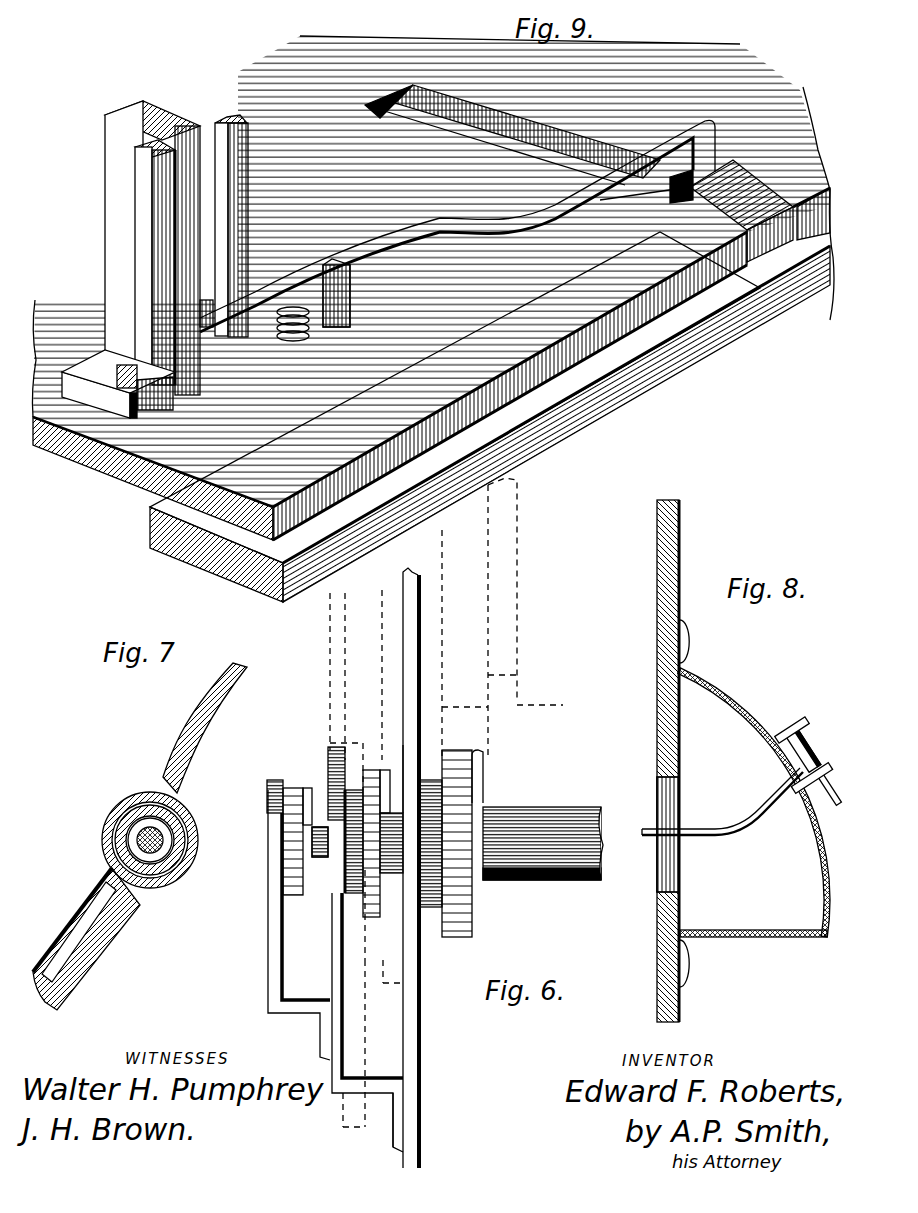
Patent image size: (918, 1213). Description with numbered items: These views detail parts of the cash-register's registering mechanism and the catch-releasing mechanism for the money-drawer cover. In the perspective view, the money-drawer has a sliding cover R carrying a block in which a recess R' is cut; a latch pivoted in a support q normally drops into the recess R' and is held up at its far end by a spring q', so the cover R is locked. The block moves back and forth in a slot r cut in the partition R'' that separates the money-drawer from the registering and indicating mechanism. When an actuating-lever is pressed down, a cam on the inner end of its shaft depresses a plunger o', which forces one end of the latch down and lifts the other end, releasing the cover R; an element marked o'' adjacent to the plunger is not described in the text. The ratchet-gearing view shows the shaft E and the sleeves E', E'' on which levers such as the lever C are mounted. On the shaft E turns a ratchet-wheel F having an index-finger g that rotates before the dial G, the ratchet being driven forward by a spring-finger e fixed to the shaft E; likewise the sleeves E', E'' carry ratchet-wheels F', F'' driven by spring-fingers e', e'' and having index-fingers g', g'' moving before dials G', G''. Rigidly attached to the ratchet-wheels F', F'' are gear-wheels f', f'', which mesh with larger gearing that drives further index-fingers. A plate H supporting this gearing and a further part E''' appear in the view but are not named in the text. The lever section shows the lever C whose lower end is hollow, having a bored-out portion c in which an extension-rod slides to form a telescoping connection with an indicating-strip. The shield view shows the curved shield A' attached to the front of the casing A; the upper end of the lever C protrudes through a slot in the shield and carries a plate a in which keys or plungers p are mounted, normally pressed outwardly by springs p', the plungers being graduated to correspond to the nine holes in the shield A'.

In FIG. 9, the slot r is at (425, 90).
In FIG. 9, the sliding cover R is at (431, 417).
In FIG. 9, the recess R' is at (715, 203).
In FIG. 9, the partition R'' is at (520, 62).
In FIG. 9, the plate a is at (475, 248).
In FIG. 9, the support q is at (348, 293).
In FIG. 9, the spring q' is at (285, 342).
In FIG. 9, the plunger o' is at (183, 248).
In FIG. 9, the base of guide posts o'' is at (118, 330).
In FIG. 7, the actuating-lever C is at (140, 836).
In FIG. 8, the actuating-lever C is at (722, 814).
In FIG. 7, the bored-out portion c is at (100, 922).
In FIG. 7, the shaft E is at (176, 836).
In FIG. 6, the shaft E is at (303, 843).
In FIG. 7, the sleeve E' is at (175, 842).
In FIG. 6, the sleeve E' is at (391, 879).
In FIG. 7, the sleeve E'' is at (150, 840).
In FIG. 6, the sleeve E'' is at (331, 876).
In FIG. 7, the shaft E''' is at (130, 840).
In FIG. 6, the shaft E''' is at (548, 826).
In FIG. 6, the index-finger g is at (267, 781).
In FIG. 6, the index-finger g' is at (322, 780).
In FIG. 6, the index-finger g'' is at (389, 762).
In FIG. 6, the spring-finger e is at (305, 794).
In FIG. 6, the spring-finger e' is at (384, 777).
In FIG. 6, the spring-finger e'' is at (502, 776).
In FIG. 6, the ratchet-wheel F is at (286, 876).
In FIG. 6, the ratchet-wheel F' is at (314, 893).
In FIG. 6, the ratchet-wheel F'' is at (478, 848).
In FIG. 6, the gear-wheel f' is at (366, 861).
In FIG. 6, the gear-wheel f'' is at (434, 871).
In FIG. 6, the dial G is at (286, 925).
In FIG. 6, the dial G' is at (355, 1022).
In FIG. 6, the dial G'' is at (392, 1077).
In FIG. 6, the supporting plate H is at (420, 1022).
In FIG. 8, the casing A is at (682, 761).
In FIG. 8, the curved shield A' is at (754, 802).
In FIG. 8, the plungers p is at (803, 737).
In FIG. 8, the springs p' is at (806, 767).